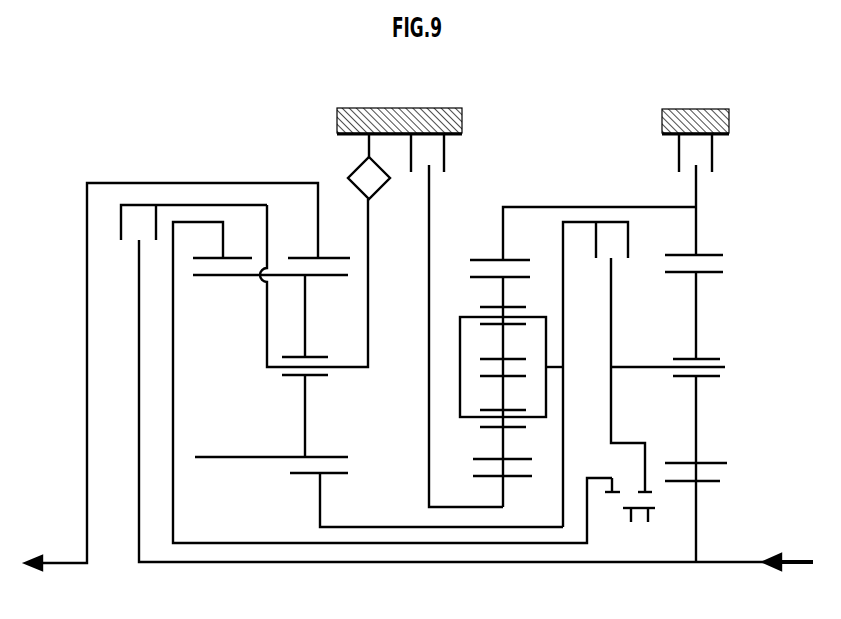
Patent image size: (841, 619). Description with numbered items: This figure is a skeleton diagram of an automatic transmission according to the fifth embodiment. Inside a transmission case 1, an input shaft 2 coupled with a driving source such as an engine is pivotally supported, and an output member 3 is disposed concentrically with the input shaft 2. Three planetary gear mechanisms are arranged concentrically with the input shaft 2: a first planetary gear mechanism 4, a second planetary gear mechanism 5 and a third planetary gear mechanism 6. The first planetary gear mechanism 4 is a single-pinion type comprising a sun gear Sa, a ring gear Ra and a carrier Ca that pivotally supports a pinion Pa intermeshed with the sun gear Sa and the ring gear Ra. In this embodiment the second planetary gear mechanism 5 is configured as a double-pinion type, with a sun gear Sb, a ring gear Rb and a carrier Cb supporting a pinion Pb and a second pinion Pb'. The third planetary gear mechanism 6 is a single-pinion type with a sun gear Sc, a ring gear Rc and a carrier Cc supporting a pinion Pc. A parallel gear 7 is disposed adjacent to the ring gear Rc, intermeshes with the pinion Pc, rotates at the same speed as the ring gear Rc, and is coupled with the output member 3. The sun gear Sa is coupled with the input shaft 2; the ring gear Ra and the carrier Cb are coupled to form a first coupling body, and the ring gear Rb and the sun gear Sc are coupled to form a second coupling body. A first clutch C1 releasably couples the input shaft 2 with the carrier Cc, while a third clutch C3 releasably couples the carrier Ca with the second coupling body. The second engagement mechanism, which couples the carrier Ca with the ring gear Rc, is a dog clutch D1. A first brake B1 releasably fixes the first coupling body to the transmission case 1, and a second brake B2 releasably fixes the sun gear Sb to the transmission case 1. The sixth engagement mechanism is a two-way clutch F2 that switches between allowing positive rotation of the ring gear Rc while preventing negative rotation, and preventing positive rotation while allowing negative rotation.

The transmission case 1 is at (428, 108).
The input shaft 2 is at (728, 565).
The output member 3 is at (62, 566).
The first planetary gear mechanism 4 is at (702, 318).
The second planetary gear mechanism 5 is at (519, 192).
The third planetary gear mechanism 6 is at (299, 513).
The parallel gear 7 is at (346, 258).
The first brake B1 is at (695, 348).
The second brake B2 is at (457, 320).
The first clutch C1 is at (194, 222).
The third clutch C3 is at (604, 374).
The 2-way clutch F2 is at (358, 166).
The dog clutch D1 is at (648, 516).
The ring gear Ra is at (722, 258).
The carrier Ca is at (650, 370).
The pinion Pa is at (672, 465).
The sun gear Sa is at (722, 481).
The ring gear Rb is at (480, 263).
The carrier Cb is at (460, 388).
The pinion Pb is at (513, 447).
The pinion Pb' is at (514, 255).
The sun gear Sb is at (482, 477).
The ring gear Rc is at (197, 261).
The carrier Cc is at (352, 371).
The pinion Pc is at (218, 460).
The sun gear Sc is at (340, 472).